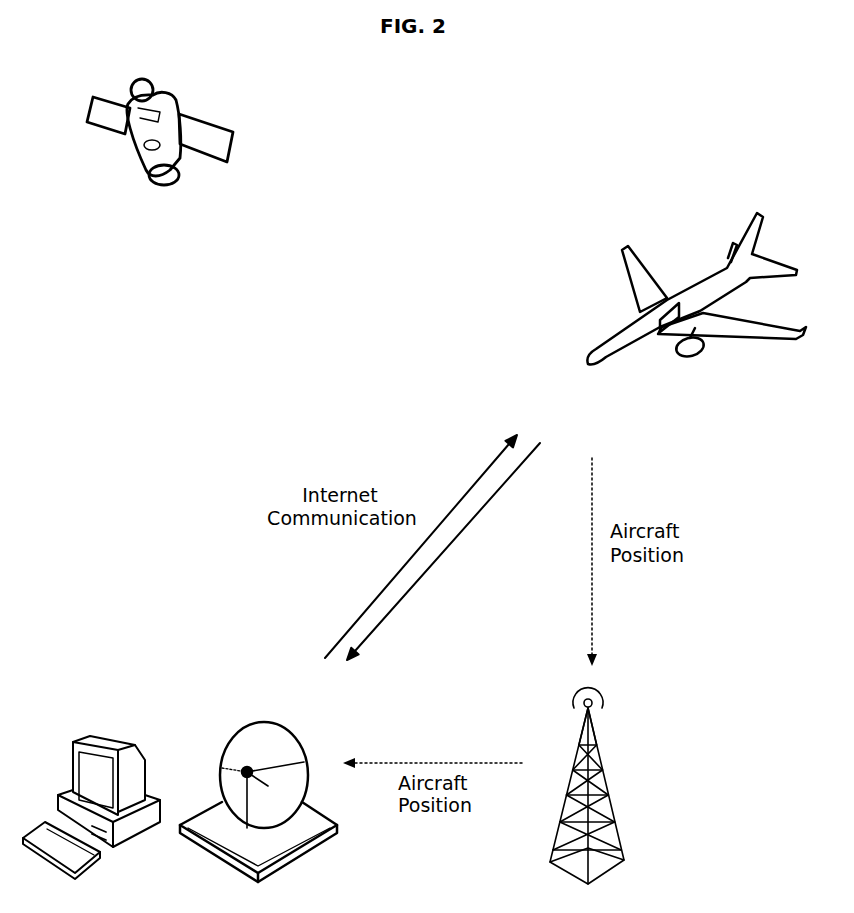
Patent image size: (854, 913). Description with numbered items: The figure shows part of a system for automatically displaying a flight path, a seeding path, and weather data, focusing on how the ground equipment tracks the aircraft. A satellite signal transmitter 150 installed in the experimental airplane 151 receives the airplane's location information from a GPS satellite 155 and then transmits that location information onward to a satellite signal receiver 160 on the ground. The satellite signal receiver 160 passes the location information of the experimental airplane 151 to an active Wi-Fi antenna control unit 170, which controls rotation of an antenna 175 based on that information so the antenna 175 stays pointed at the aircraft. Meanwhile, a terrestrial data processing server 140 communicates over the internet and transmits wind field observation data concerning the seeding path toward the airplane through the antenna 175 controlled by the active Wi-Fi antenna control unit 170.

The terrestrial data processing server 140 is at (100, 740).
The satellite signal transmitter 150 is at (696, 289).
The experimental airplane 151 is at (717, 287).
The GPS satellite 155 is at (172, 104).
The satellite signal receiver 160 is at (613, 793).
The active Wi-Fi antenna control unit 170 is at (307, 855).
The antenna 175 is at (244, 766).